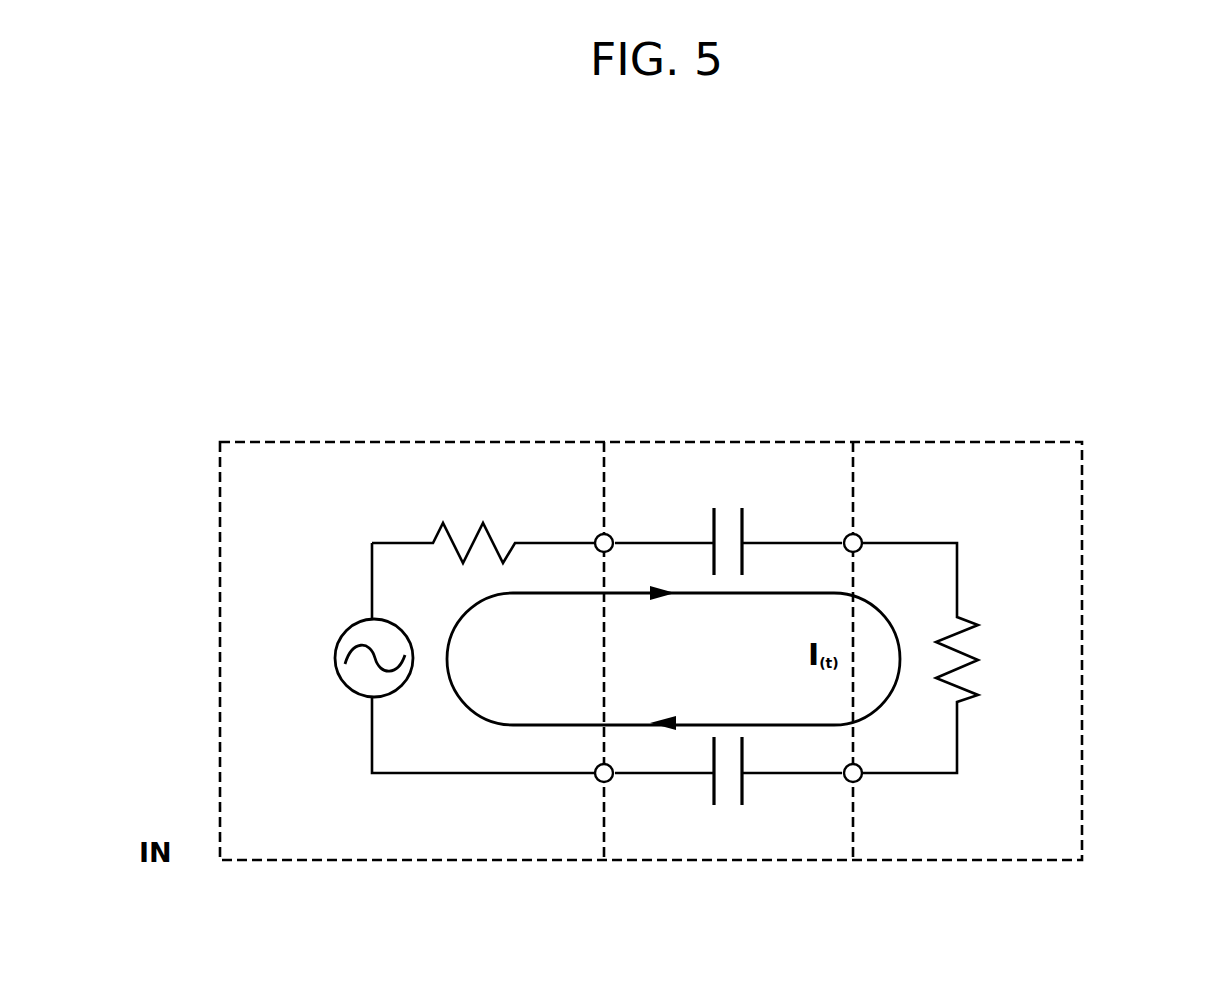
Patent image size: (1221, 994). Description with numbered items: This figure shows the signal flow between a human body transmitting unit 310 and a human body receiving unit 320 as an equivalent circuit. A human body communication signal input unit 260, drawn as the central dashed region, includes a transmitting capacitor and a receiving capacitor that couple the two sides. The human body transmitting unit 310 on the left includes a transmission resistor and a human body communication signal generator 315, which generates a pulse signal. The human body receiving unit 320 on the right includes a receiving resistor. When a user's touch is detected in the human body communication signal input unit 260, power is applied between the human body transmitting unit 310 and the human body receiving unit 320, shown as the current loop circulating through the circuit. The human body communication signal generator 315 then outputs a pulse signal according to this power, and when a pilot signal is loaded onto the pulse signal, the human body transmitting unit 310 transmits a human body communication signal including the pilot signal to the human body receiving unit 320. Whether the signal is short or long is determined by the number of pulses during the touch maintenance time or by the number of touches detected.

The human body communication signal input unit 260 is at (725, 442).
The human body transmitting unit 310 is at (356, 612).
The human body communication signal generator 315 is at (346, 693).
The human body receiving unit 320 is at (1082, 597).